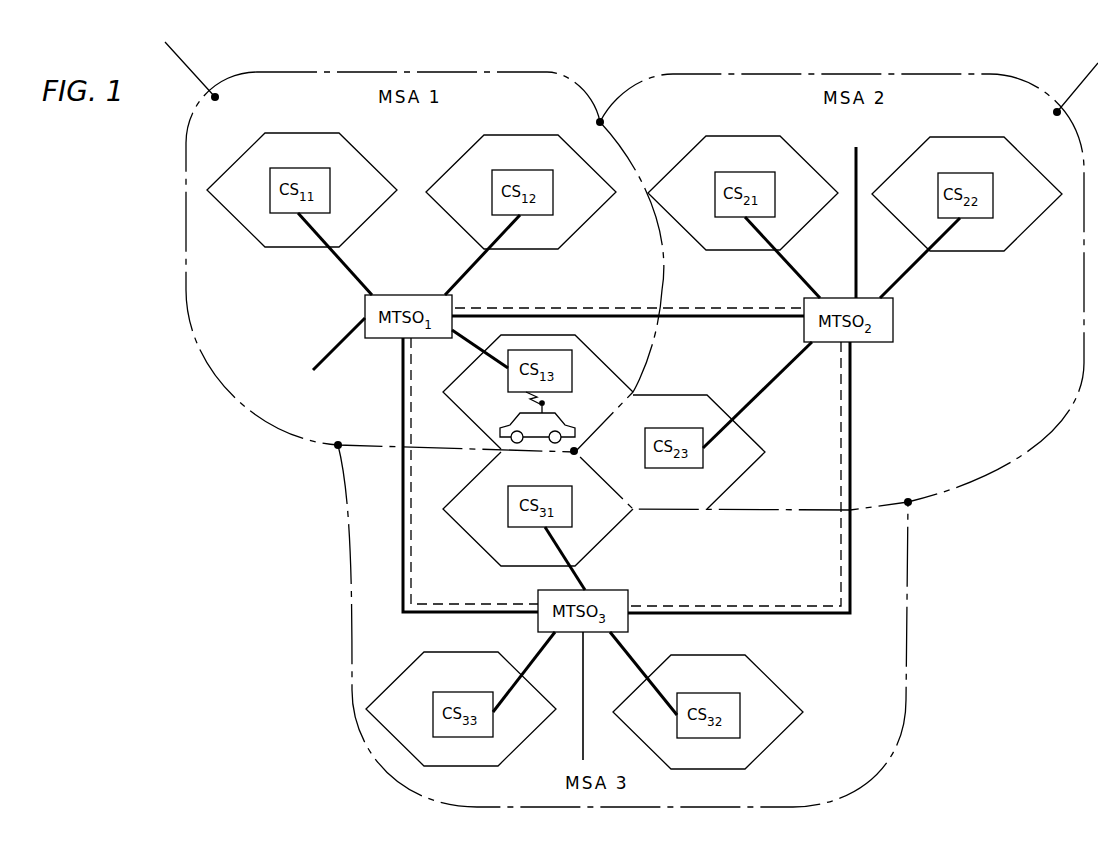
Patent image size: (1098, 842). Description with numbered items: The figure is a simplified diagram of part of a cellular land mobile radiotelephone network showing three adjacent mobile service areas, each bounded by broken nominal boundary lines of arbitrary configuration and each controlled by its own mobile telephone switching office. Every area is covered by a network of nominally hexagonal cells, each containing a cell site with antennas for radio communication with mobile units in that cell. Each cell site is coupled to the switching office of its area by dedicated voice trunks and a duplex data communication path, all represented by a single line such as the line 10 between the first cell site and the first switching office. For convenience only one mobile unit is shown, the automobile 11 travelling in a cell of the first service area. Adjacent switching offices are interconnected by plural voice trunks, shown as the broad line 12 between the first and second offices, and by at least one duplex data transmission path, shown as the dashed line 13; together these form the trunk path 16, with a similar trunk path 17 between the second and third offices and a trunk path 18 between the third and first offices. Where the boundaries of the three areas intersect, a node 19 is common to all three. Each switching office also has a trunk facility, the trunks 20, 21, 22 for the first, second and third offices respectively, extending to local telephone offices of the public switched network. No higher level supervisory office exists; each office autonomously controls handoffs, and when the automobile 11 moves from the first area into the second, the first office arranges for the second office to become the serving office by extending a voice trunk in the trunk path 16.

The line 10 is at (366, 280).
The automobile 11 is at (514, 417).
The broad line 12 is at (700, 320).
The dashed line 13 is at (698, 308).
The trunk path 16 is at (543, 311).
The trunk path 17 is at (850, 400).
The trunk path 18 is at (400, 475).
The node 19 is at (578, 451).
The trunk 20 is at (346, 347).
The trunk 21 is at (857, 272).
The trunk 22 is at (584, 742).